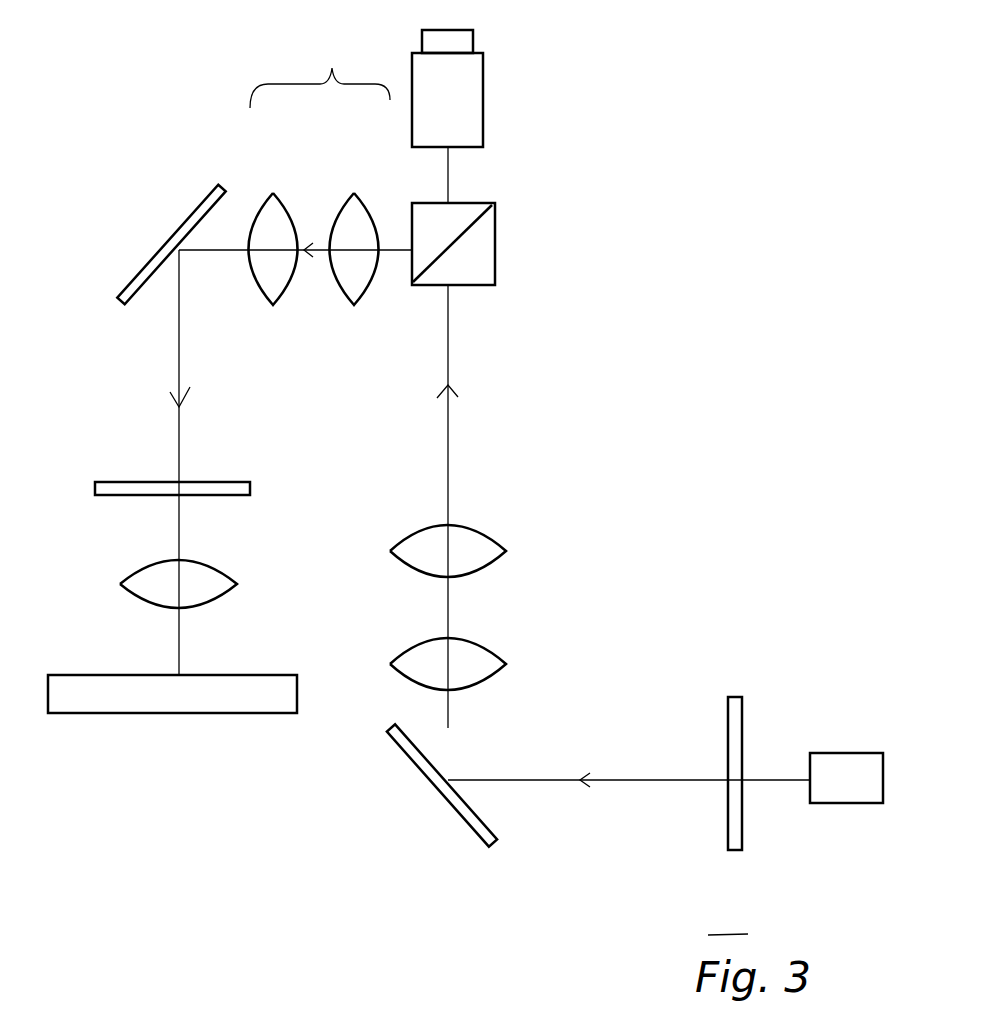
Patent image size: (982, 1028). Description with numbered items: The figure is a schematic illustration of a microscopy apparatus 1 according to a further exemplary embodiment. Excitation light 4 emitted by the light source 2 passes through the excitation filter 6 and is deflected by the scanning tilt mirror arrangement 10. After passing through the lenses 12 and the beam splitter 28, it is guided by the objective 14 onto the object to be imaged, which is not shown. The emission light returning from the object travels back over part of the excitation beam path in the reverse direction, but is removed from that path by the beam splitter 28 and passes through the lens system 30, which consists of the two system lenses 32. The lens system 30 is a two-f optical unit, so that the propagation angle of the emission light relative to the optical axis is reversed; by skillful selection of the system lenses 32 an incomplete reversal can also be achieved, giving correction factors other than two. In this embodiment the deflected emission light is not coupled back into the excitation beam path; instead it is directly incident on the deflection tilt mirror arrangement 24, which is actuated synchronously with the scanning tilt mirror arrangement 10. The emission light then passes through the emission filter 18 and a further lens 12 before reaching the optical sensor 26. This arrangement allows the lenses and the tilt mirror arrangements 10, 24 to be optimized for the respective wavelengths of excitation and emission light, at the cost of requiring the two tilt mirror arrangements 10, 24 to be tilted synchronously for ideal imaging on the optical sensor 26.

The microscopy apparatus 1 is at (655, 395).
The light source 2 is at (840, 775).
The excitation light 4 is at (782, 782).
The excitation filter 6 is at (742, 712).
The scanning tilt mirror arrangement 10 is at (459, 820).
The lenses 12 is at (230, 577).
The objective 14 is at (485, 95).
The emission filter 18 is at (212, 480).
The deflection tilt mirror arrangement 24 is at (173, 230).
The optical sensor 26 is at (205, 714).
The beam splitter 28 is at (495, 263).
The lens system 30 is at (320, 69).
The system lenses 32 is at (287, 208).